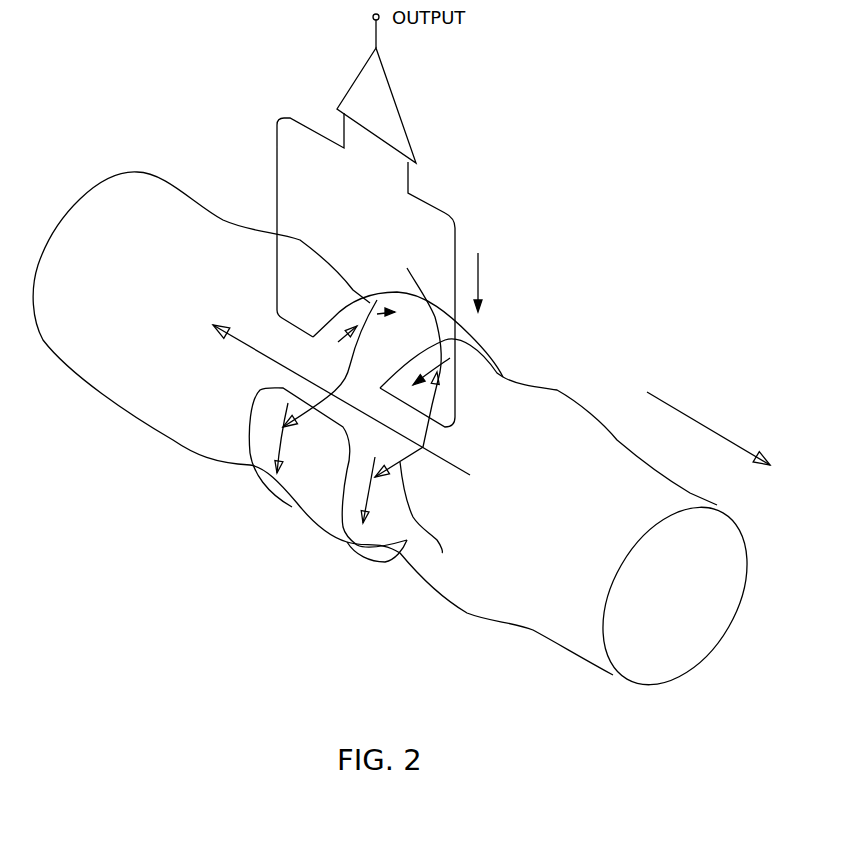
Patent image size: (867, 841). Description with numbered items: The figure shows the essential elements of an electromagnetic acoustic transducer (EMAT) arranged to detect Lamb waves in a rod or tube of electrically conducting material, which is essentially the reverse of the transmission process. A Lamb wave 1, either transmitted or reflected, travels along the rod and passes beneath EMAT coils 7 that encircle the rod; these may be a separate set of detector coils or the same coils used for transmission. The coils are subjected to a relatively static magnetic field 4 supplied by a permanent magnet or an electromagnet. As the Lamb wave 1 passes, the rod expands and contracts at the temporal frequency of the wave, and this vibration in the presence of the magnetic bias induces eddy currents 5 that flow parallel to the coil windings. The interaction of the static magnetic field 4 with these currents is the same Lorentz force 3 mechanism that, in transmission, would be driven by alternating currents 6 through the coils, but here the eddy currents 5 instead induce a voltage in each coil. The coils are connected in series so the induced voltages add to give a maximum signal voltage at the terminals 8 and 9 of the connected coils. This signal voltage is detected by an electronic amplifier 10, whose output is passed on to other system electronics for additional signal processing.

The Lamb wave 1 is at (723, 440).
The Lorentz forces 3 is at (442, 553).
The static magnetic field 4 is at (263, 352).
The eddy currents 5 is at (373, 298).
The alternating currents 6 is at (478, 283).
The EMAT coils 7 is at (383, 563).
The terminal 8 is at (327, 133).
The terminal 9 is at (428, 205).
The electronic amplifier 10 is at (398, 104).